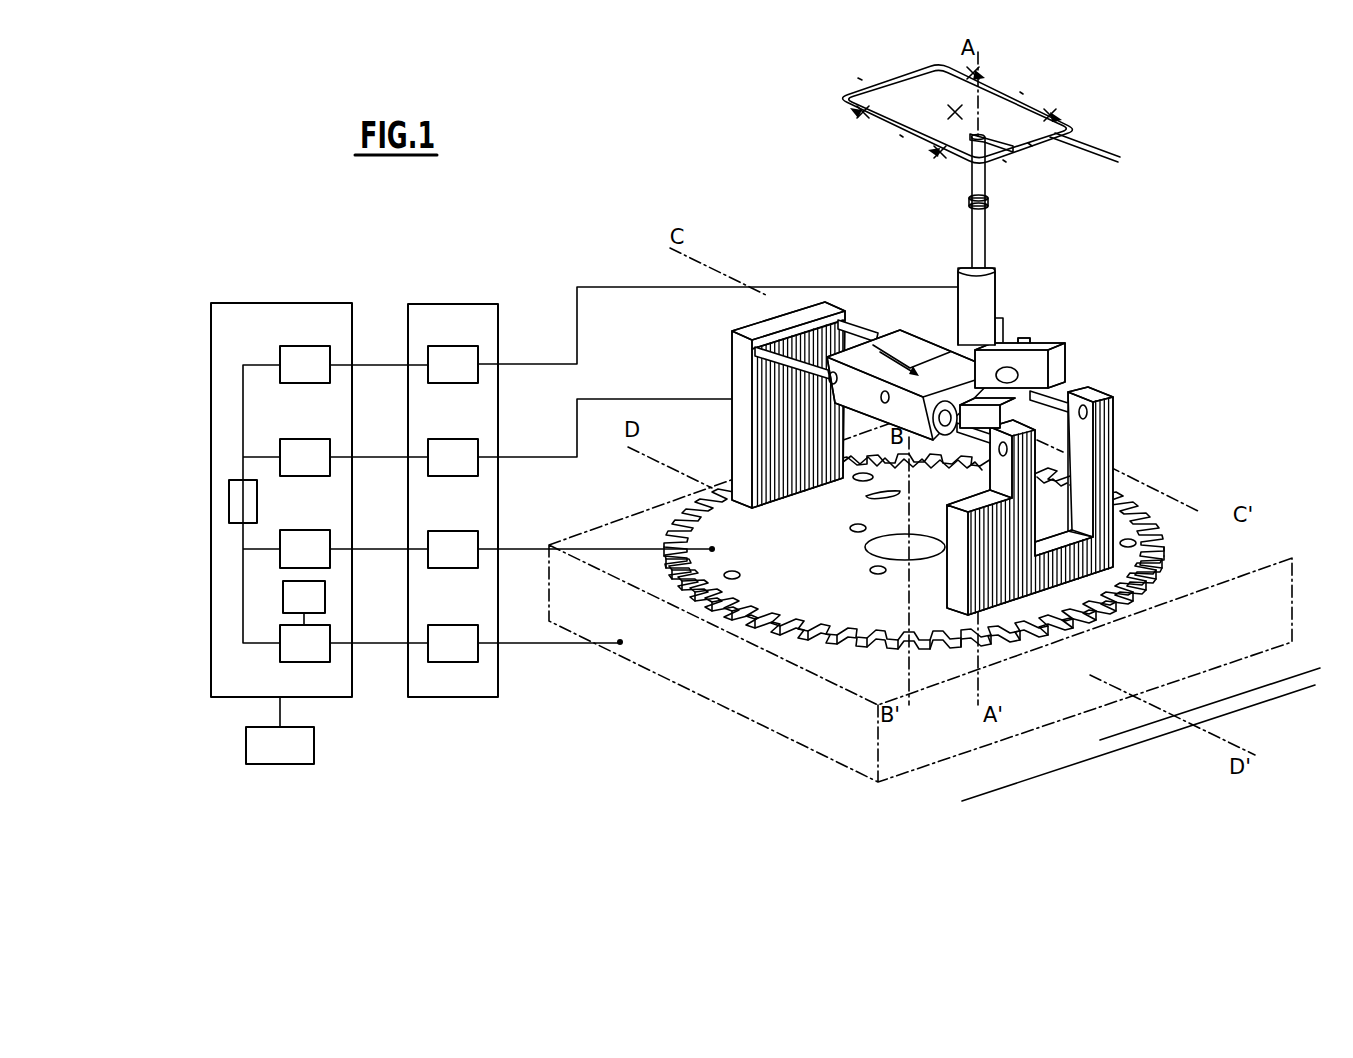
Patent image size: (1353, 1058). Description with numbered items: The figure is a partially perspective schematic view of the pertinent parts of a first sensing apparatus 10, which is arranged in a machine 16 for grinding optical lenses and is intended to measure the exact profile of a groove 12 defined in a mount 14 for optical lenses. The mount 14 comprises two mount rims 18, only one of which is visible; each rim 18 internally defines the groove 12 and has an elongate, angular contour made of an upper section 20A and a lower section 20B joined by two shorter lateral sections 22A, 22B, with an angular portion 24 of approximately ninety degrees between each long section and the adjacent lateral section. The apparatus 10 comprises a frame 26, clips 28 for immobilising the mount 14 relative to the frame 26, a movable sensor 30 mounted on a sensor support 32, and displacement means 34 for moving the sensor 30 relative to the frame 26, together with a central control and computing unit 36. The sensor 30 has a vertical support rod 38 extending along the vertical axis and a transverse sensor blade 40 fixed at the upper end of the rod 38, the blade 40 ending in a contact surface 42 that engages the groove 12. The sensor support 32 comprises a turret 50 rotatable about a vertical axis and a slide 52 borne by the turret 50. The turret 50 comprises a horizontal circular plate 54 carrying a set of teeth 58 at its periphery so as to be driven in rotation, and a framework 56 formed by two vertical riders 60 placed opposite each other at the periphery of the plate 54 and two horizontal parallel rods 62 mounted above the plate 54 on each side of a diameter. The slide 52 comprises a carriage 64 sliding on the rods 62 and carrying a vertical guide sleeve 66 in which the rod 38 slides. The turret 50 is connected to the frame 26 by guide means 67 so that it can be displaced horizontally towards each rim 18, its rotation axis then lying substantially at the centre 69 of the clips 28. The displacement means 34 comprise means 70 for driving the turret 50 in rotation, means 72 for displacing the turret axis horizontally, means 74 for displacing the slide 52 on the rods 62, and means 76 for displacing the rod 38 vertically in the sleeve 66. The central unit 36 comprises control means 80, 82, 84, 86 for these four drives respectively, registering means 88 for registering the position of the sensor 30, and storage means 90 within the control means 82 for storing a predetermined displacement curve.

The sensing apparatus 10 is at (1168, 172).
The groove 12 is at (1030, 145).
The mount 14 is at (905, 70).
The machine 16 is at (280, 745).
The mount rim 18 is at (1120, 88).
The upper section 20A is at (1022, 92).
The lower section 20B is at (900, 135).
The lateral section 22A is at (858, 76).
The lateral section 22B is at (1005, 162).
The angular portion 24 is at (838, 100).
The frame 26 is at (1105, 738).
The clips 28 is at (852, 118).
The movable sensor 30 is at (1021, 260).
The sensor support 32 is at (1217, 388).
The displacement means 34 is at (454, 297).
The central control and computing unit 36 is at (274, 297).
The vertical support rod 38 is at (977, 246).
The sensor blade 40 is at (990, 136).
The contact surface 42 is at (1060, 143).
The turret 50 is at (704, 662).
The slide 52 is at (1082, 347).
The horizontal circular plate 54 is at (914, 622).
The framework 56 is at (1120, 440).
The set of teeth 58 is at (830, 637).
The vertical riders 60 is at (742, 442).
The horizontal parallel rods 62 is at (857, 322).
The carriage 64 is at (882, 412).
The vertical guide sleeve 66 is at (995, 303).
The guide means 67 is at (1233, 647).
The centre 69 is at (948, 116).
The rotational drive means 70 is at (571, 549).
The turret axis displacement means 72 is at (525, 643).
The slide displacement means 74 is at (643, 436).
The rod displacement means 76 is at (701, 334).
The control means 80 is at (354, 549).
The control means 82 is at (354, 643).
The control means 84 is at (354, 457).
The control means 86 is at (354, 364).
The registering means 88 is at (232, 507).
The storage means 90 is at (304, 603).